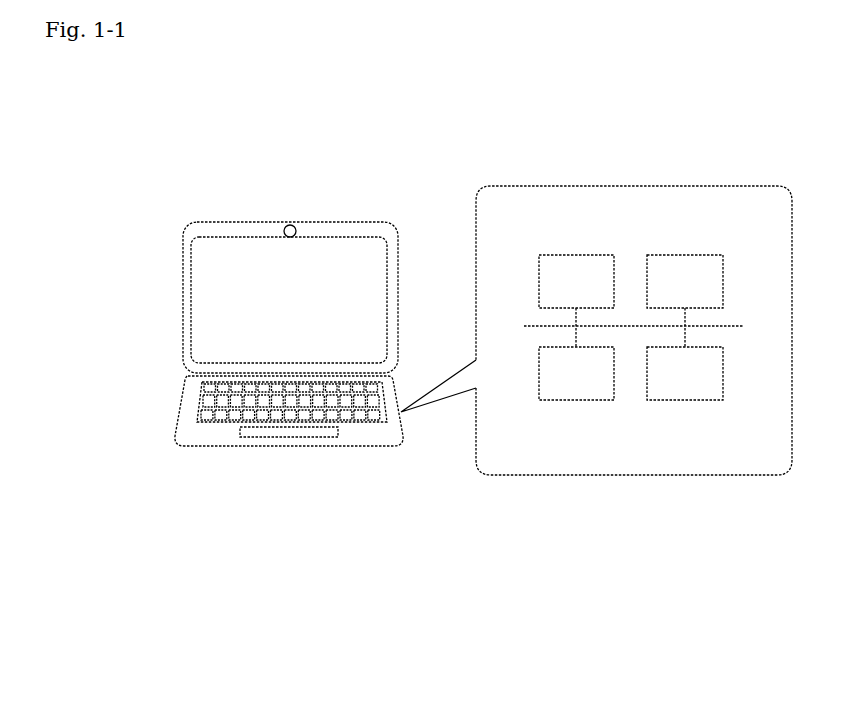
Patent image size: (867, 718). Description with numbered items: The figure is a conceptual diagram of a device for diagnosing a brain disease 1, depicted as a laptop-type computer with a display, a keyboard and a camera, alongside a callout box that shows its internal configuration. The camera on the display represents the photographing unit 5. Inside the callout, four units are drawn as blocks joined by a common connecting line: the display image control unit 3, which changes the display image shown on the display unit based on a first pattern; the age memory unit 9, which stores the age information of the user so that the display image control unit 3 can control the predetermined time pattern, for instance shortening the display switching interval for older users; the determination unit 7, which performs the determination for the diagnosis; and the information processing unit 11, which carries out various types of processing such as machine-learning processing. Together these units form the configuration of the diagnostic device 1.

The device for diagnosing a brain disease 1 is at (392, 194).
The display image control unit 3 is at (580, 272).
The photographing unit 5 is at (292, 227).
The determination unit 7 is at (578, 387).
The age memory unit 9 is at (683, 273).
The information processing unit 11 is at (691, 387).